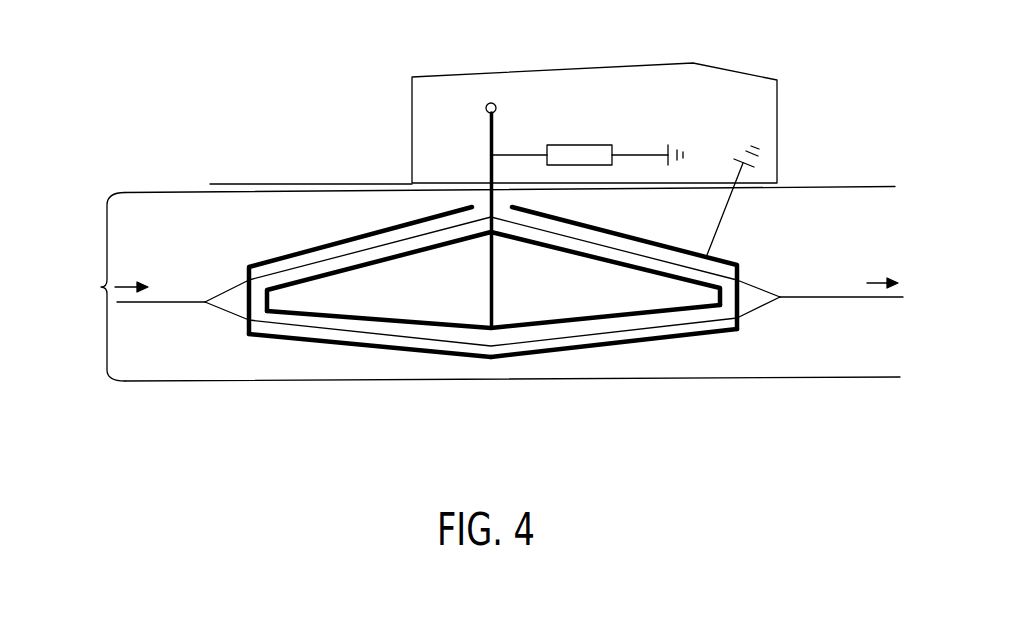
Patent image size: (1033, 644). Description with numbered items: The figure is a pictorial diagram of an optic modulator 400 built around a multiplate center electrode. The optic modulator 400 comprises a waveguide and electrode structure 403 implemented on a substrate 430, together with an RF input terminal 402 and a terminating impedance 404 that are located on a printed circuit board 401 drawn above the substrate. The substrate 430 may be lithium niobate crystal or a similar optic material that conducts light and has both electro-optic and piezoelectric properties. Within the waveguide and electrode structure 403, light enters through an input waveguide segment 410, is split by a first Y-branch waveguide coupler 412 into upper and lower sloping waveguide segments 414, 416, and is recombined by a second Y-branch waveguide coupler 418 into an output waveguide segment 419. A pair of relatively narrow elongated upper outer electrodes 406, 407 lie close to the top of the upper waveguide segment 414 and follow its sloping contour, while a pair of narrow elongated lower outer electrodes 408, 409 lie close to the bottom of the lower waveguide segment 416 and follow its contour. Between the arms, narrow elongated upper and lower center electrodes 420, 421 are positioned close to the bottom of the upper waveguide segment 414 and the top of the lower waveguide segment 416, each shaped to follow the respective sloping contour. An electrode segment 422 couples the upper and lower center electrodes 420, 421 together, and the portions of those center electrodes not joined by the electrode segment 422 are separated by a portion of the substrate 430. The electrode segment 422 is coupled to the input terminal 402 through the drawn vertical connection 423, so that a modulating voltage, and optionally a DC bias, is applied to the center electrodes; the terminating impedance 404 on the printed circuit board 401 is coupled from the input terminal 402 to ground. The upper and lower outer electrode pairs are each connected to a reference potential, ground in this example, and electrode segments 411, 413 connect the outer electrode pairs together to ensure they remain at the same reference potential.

The optic modulator 400 is at (266, 116).
The printed circuit board 401 is at (649, 64).
The RF input terminal 402 is at (497, 105).
The waveguide and electrode structure 403 is at (85, 287).
The terminating impedance 404 is at (575, 145).
The upper outer electrode 406 is at (372, 233).
The upper outer electrode 407 is at (637, 236).
The lower outer electrode 408 is at (373, 350).
The lower outer electrode 409 is at (660, 341).
The input waveguide segment 410 is at (152, 305).
The electrode segment 411 is at (246, 294).
The first Y-branch waveguide coupler 412 is at (205, 305).
The electrode segment 413 is at (758, 278).
The upper sloping waveguide segment 414 is at (300, 262).
The lower sloping waveguide segment 416 is at (308, 332).
The second Y-branch waveguide coupler 418 is at (783, 298).
The output waveguide segment 419 is at (863, 298).
The upper center electrode 420 is at (387, 260).
The lower center electrode 421 is at (408, 318).
The electrode segment 422 is at (494, 204).
The signal conductor 423 is at (490, 167).
The substrate 430 is at (780, 223).